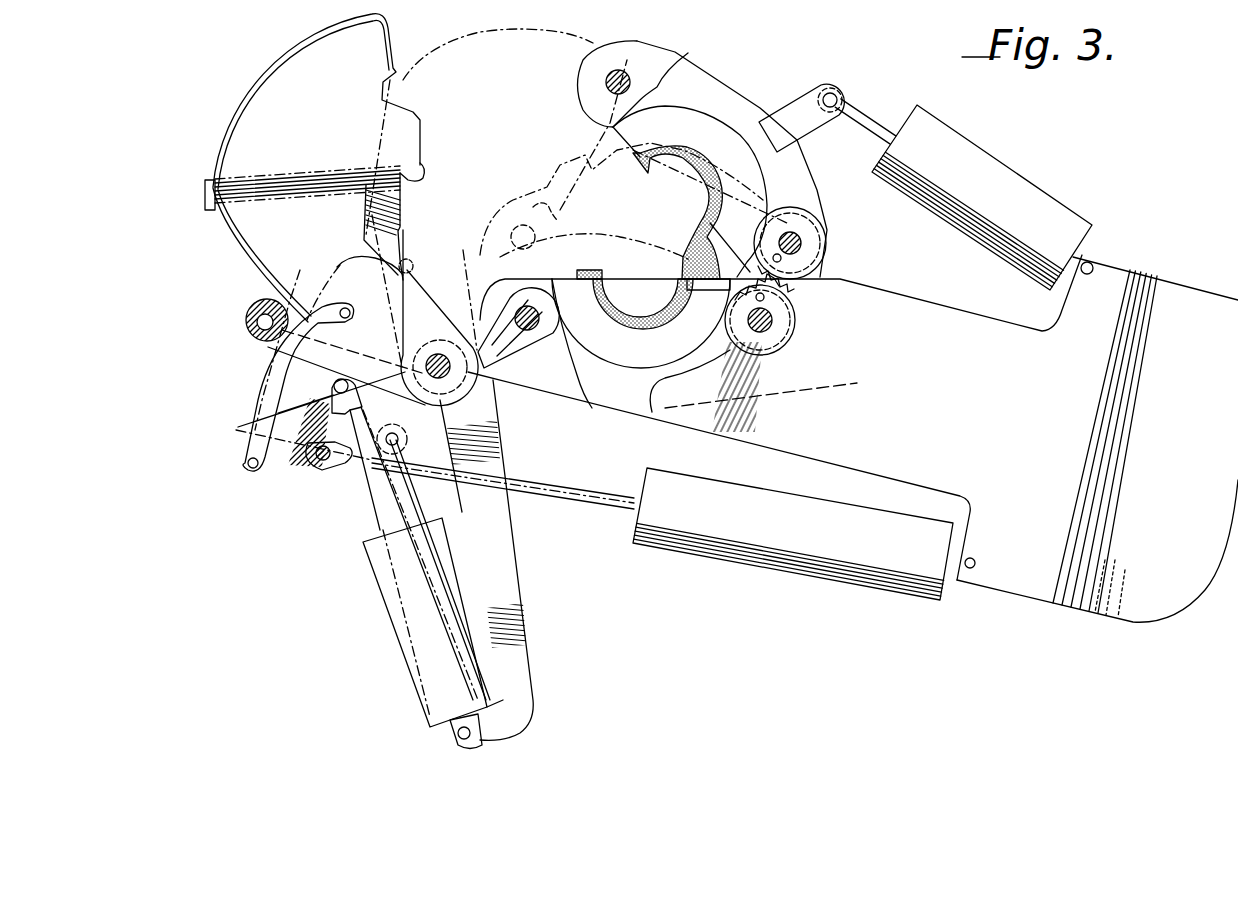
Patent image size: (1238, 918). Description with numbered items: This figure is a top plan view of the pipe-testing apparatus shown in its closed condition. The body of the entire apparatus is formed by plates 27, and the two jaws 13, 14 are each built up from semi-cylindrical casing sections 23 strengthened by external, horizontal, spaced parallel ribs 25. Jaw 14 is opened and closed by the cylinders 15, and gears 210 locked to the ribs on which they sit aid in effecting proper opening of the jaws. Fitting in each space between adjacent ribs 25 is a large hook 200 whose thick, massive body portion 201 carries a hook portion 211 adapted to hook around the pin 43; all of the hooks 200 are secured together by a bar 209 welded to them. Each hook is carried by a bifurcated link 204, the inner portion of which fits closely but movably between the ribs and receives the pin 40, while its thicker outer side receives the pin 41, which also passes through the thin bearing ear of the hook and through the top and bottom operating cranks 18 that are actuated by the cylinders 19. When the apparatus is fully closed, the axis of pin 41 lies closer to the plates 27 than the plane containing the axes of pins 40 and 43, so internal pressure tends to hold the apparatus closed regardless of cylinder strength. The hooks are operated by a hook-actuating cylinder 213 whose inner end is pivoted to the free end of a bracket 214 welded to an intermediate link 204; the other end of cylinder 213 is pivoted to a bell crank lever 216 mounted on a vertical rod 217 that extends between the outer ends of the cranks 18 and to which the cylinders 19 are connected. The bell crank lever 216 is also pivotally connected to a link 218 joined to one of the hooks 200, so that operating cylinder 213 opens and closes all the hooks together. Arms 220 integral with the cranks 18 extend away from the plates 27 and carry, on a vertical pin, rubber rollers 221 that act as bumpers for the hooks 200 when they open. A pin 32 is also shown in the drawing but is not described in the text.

The jaw 13 is at (597, 412).
The jaw 14 is at (745, 77).
The cylinders 15 is at (1018, 180).
The operating cranks 18 is at (392, 410).
The cylinders 19 is at (765, 568).
The semi-cylindrical casing sections 23 is at (700, 120).
The ribs 25 is at (693, 64).
The plates 27 is at (1182, 290).
The gear pin 32 is at (798, 237).
The pin 40 is at (540, 318).
The pin 41 is at (440, 373).
The pin 43 is at (606, 80).
The hook 200 is at (250, 77).
The body portion 201 is at (312, 165).
The bifurcated link 204 is at (462, 320).
The bar 209 is at (205, 190).
The gears 210 is at (826, 247).
The hook portion 211 is at (424, 170).
The hook-actuating cylinder 213 is at (397, 637).
The bracket 214 is at (524, 622).
The bell crank lever 216 is at (275, 446).
The rod 217 is at (321, 465).
The link 218 is at (340, 262).
The arms 220 is at (262, 357).
The rubber rollers 221 is at (248, 321).